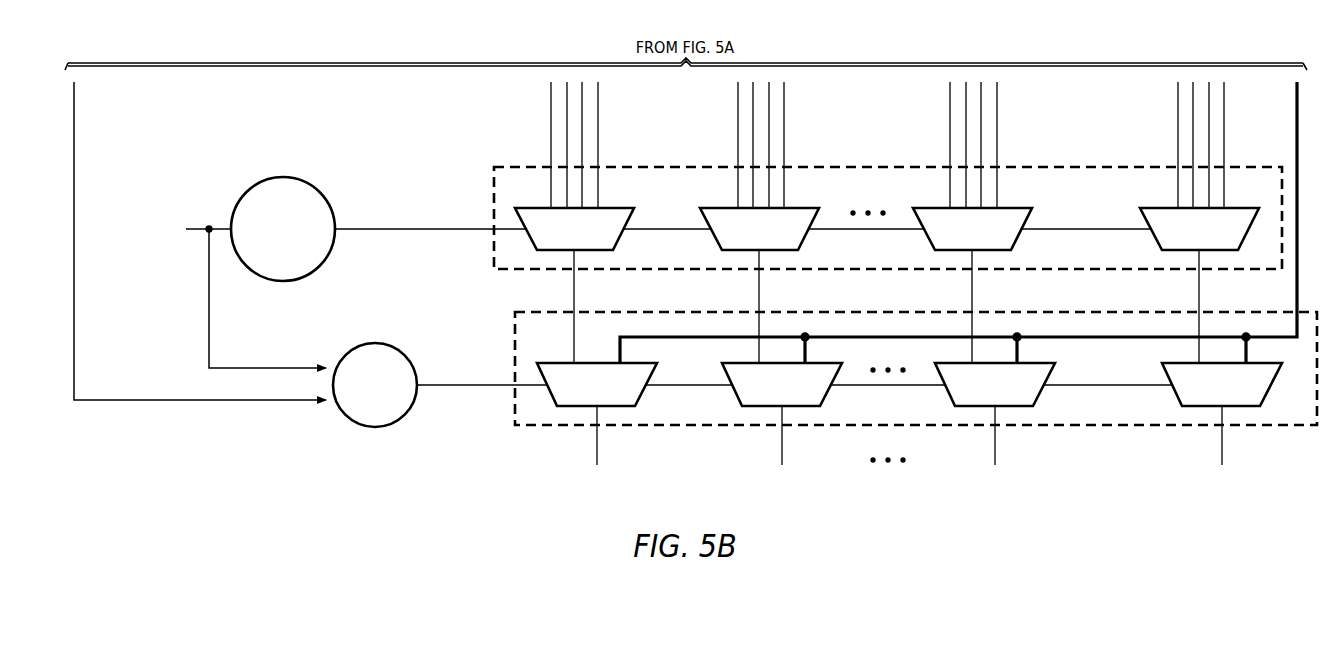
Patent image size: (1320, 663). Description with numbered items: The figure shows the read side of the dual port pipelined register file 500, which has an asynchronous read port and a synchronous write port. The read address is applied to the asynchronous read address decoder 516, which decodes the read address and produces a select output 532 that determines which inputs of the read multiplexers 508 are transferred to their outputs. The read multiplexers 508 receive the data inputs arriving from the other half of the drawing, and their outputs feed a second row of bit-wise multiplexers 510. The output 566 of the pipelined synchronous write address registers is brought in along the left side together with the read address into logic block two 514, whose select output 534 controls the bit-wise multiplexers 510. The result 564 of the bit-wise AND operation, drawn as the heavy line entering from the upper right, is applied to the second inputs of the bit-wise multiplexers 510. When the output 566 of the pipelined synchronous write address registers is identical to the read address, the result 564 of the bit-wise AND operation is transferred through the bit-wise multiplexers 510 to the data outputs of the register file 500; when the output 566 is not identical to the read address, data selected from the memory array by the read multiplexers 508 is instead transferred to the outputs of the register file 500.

The pipelined register file 500 is at (168, 470).
The read multiplexers 508 is at (494, 207).
The bit-wise multiplexers 510 is at (1120, 428).
The logic block 2 514 is at (375, 427).
The read address decoder 516 is at (283, 177).
The read address decoder output 532 is at (380, 228).
The logic block 2 output 534 is at (468, 388).
The result of the bit-wise AND operation 564 is at (1297, 147).
The output of the pipelined synchronous write address registers 566 is at (74, 265).